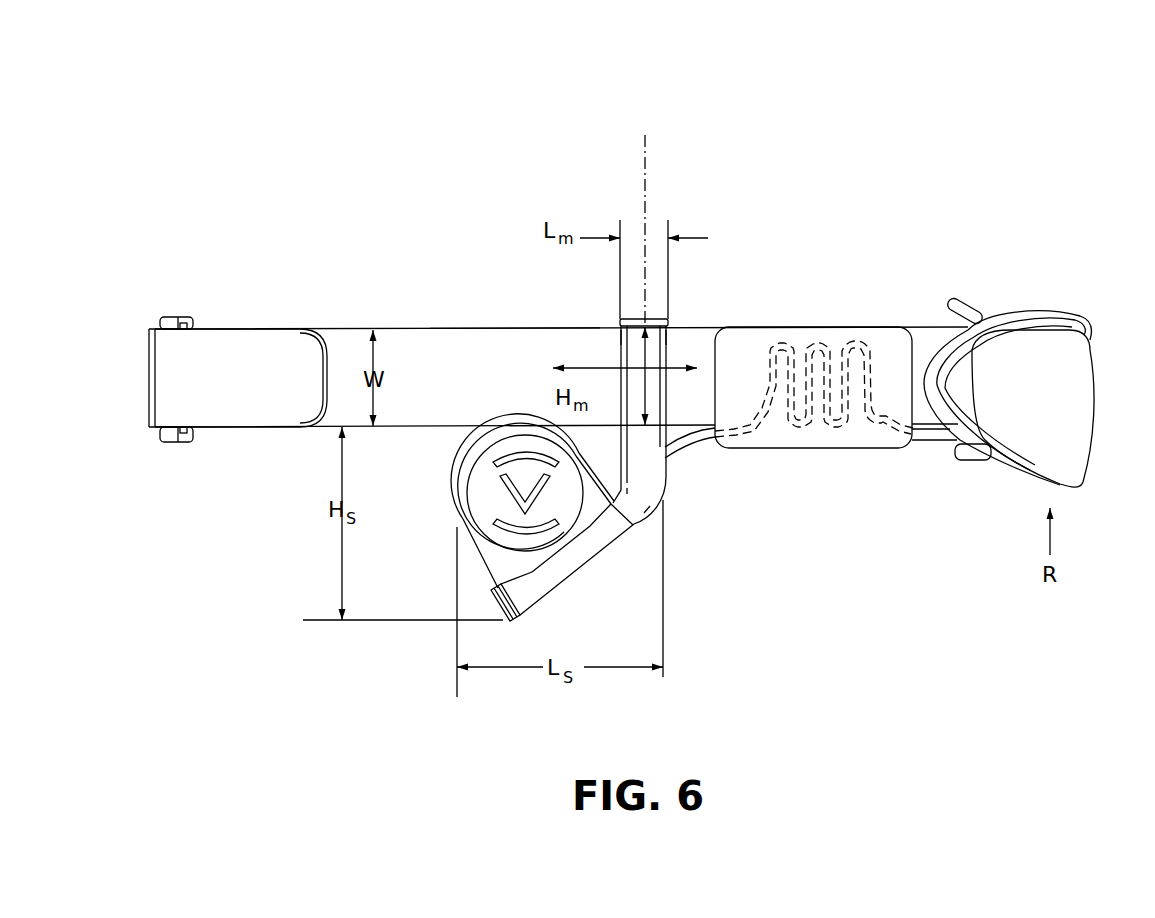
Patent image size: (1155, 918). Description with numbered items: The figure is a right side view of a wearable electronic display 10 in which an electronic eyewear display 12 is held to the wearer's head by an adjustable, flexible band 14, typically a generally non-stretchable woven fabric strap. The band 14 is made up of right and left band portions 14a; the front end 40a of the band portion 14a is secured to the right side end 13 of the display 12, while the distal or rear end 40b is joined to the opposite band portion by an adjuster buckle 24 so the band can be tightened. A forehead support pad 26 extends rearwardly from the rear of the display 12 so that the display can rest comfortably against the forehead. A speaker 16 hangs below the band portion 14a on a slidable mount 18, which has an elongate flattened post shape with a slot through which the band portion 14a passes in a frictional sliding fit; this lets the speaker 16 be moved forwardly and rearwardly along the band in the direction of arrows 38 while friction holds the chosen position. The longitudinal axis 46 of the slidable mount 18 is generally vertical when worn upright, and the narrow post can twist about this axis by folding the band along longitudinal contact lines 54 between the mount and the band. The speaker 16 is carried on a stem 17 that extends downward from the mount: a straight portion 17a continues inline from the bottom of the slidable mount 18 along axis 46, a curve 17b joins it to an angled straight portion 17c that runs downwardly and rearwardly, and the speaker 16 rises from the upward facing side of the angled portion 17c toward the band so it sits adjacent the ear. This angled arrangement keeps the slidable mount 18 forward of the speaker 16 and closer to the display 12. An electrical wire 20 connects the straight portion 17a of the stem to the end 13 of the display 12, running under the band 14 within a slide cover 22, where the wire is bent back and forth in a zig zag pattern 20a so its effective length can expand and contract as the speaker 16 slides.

The wearable electronic display 10 is at (408, 207).
The electronic eyewear display 12 is at (1083, 447).
The ends of display 13 is at (973, 417).
The flexible band 14 is at (427, 340).
The band portion 14a is at (490, 336).
The speaker 16 is at (475, 496).
The stem 17 is at (550, 583).
The straight portion 17a is at (628, 446).
The curve 17b is at (667, 497).
The angled straight portion 17c is at (597, 547).
The slidable mount 18 is at (650, 322).
The electrical wire 20 is at (687, 455).
The coiled conduit 20a is at (795, 432).
The slide cover 22 is at (853, 448).
The adjuster buckle 24 is at (182, 317).
The forehead support pad 26 is at (960, 296).
The arrows 38 is at (595, 368).
The front end 40a is at (925, 330).
The distal end 40b is at (233, 415).
The longitudinal axis 46 is at (645, 152).
The longitudinal contact lines 54 is at (621, 345).